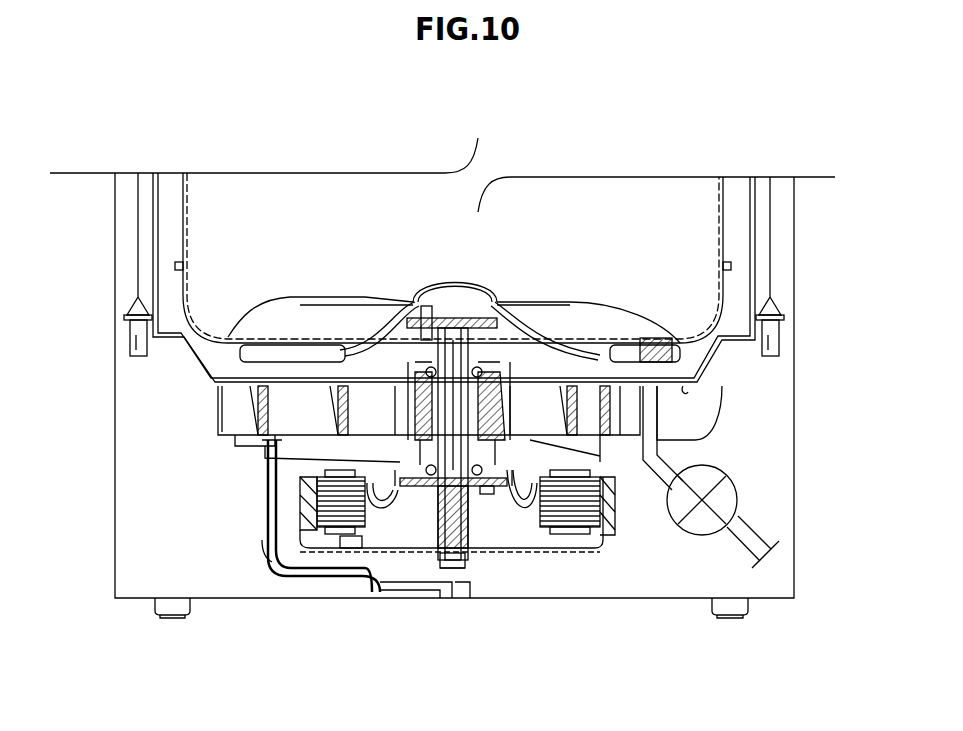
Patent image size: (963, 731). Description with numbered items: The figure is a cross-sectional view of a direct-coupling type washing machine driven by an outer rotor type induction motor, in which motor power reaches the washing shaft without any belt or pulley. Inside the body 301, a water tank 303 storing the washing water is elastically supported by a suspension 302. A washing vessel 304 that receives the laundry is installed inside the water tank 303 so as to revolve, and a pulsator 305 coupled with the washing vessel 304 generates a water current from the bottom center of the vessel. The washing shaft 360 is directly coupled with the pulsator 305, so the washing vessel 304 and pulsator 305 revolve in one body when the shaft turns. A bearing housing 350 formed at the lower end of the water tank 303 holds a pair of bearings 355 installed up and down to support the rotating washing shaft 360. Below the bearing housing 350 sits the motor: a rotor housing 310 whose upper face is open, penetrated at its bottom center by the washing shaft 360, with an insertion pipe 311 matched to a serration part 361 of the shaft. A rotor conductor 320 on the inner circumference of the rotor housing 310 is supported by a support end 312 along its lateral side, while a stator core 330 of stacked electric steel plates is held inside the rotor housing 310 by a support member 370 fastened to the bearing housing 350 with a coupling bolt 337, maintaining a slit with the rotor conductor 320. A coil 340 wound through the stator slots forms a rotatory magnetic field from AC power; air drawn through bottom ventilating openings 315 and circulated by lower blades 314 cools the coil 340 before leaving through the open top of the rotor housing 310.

The body 301 is at (796, 205).
The suspension 302 is at (771, 270).
The water tank 303 is at (157, 210).
The washing vessel 304 is at (185, 240).
The pulsator 305 is at (247, 312).
The rotor housing 310 is at (300, 572).
The insertion pipe 311 is at (468, 563).
The support end 312 is at (275, 560).
The lower blades 314 is at (366, 600).
The bottom ventilating openings 315 is at (342, 552).
The rotor conductor 320 is at (318, 507).
The stator core 330 is at (575, 530).
The coupling bolt 337 is at (488, 494).
The coil 340 is at (588, 473).
The bearing housing 350 is at (510, 420).
The bearings 355 is at (468, 445).
The washing shaft 360 is at (455, 355).
The serration part 361 is at (435, 568).
The support member 370 is at (530, 548).